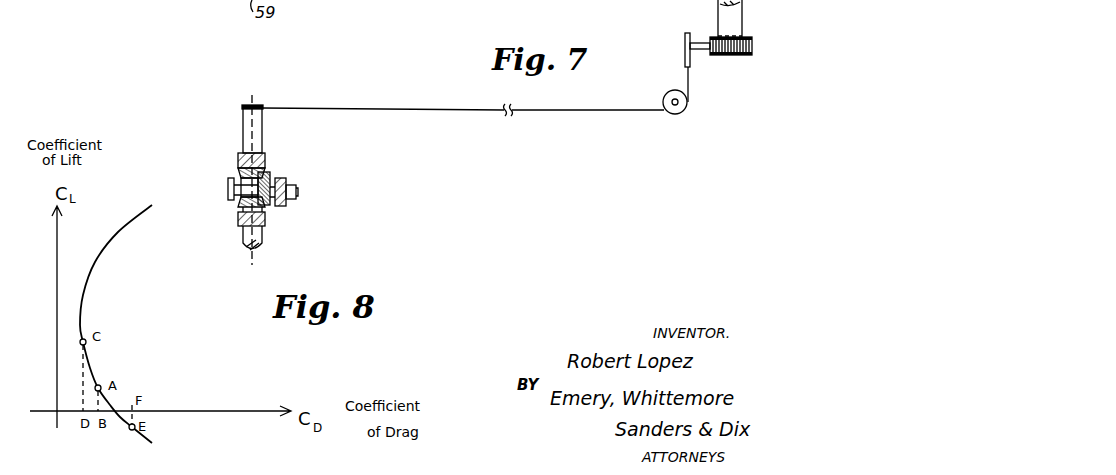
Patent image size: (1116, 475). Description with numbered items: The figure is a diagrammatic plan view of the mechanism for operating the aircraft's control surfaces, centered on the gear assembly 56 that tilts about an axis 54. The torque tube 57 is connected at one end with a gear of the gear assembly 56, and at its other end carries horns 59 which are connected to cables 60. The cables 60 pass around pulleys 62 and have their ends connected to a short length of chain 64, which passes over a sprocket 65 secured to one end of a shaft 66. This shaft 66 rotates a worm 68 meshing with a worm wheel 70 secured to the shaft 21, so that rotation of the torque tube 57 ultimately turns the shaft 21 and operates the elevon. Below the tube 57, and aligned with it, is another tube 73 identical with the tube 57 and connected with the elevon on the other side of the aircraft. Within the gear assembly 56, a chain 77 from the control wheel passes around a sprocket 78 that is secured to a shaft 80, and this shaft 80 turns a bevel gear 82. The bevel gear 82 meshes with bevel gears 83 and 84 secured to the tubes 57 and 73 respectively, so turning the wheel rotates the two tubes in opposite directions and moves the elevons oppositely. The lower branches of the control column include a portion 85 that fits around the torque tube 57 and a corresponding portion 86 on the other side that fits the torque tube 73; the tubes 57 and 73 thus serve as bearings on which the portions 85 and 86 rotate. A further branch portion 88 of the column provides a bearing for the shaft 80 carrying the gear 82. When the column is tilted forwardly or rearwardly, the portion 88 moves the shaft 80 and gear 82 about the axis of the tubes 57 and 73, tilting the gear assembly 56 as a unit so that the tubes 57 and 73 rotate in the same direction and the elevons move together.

The shaft 21 is at (742, 18).
The axis 54 is at (255, 253).
The gear assembly 56 is at (233, 158).
The torque tube 57 is at (262, 138).
The horns 59 is at (263, 107).
The cables 60 is at (415, 111).
The pulleys 62 is at (683, 112).
The chain 64 is at (685, 60).
The sprocket 65 is at (685, 40).
The shaft 66 is at (700, 50).
The worm 68 is at (745, 55).
The worm wheel 70 is at (722, 55).
The tube 73 is at (262, 233).
The chain 77 is at (241, 178).
The sprocket 78 is at (228, 191).
The shaft 80 is at (241, 200).
The bevel gear 82 is at (270, 176).
The bevel gear 83 is at (237, 175).
The bevel gear 84 is at (244, 206).
The portion 85 is at (266, 158).
The portion 86 is at (265, 219).
The branch portion 88 is at (286, 184).